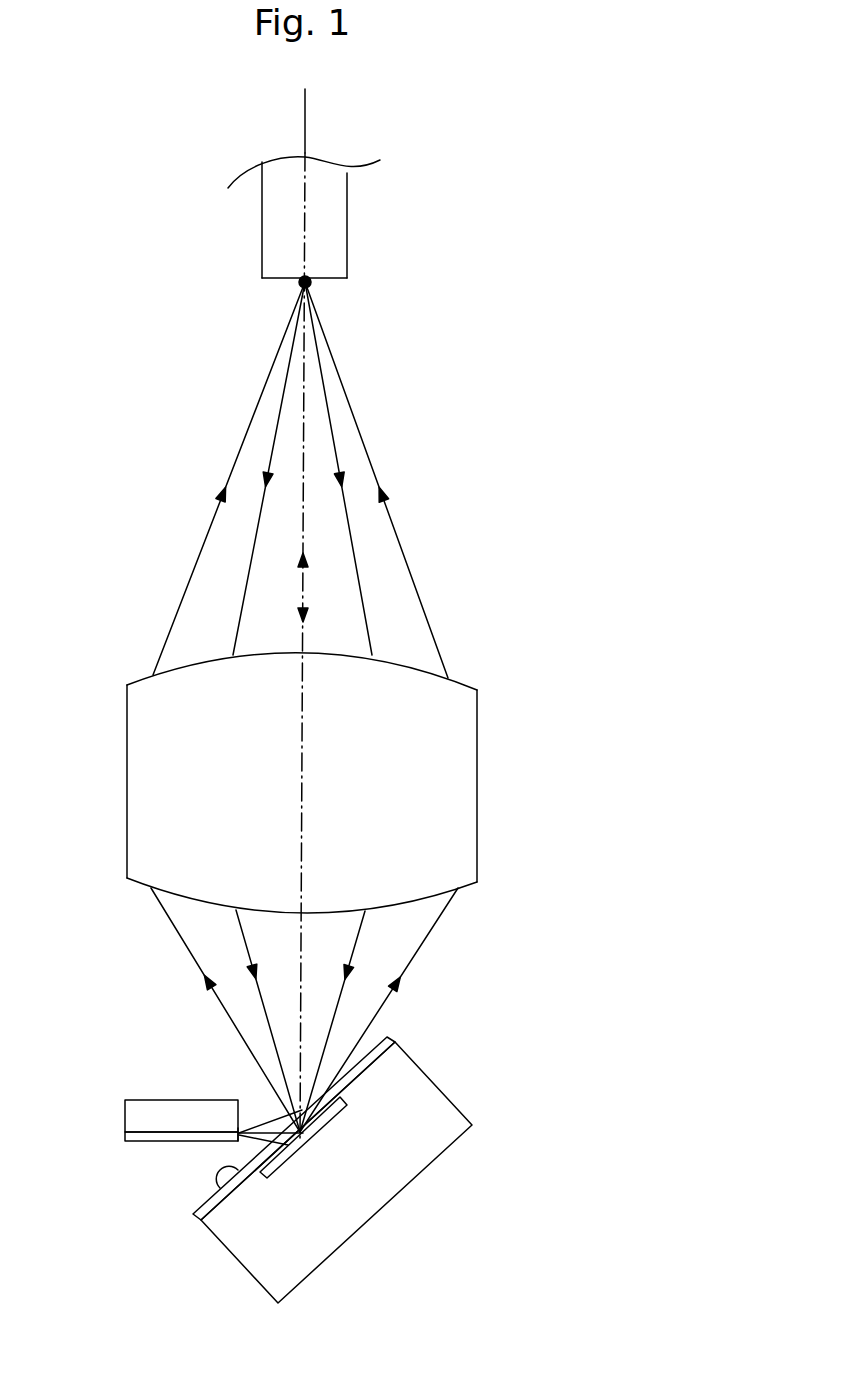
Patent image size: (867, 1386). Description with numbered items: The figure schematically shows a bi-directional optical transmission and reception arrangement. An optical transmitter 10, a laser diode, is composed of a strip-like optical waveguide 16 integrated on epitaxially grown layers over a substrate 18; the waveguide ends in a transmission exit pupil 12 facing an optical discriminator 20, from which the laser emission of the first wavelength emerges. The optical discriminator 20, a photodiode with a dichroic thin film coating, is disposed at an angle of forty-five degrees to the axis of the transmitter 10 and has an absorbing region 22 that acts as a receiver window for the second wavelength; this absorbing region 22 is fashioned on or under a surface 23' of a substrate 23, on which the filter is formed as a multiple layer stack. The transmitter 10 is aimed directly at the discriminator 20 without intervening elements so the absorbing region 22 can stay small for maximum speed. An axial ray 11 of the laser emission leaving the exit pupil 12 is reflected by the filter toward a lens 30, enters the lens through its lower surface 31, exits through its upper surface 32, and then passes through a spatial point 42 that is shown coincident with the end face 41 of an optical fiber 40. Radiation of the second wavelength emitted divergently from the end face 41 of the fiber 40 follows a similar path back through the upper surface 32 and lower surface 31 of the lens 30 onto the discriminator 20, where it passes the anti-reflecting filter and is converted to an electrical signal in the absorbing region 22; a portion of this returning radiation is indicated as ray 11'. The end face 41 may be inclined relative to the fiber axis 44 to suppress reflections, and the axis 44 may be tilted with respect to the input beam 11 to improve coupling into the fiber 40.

The optical transmitter 10 is at (131, 1150).
The axial ray 11 is at (304, 1016).
The upward beam portion 11' is at (385, 572).
The transmission exit pupil 12 is at (242, 1141).
The strip-like optical waveguide 16 is at (147, 1141).
The substrate 18 is at (143, 1108).
The optical discriminator 20 is at (358, 1159).
The absorbing region 22 is at (335, 1110).
The substrate 23 is at (336, 1172).
The surface of substrate 23' is at (255, 1200).
The lens 30 is at (337, 781).
The lens bottom surface 31 is at (458, 886).
The lens top surface 32 is at (420, 666).
The optical fiber 40 is at (332, 218).
The end face 41 is at (347, 278).
The spatial point 42 is at (320, 285).
The axis of the fiber 44 is at (307, 121).